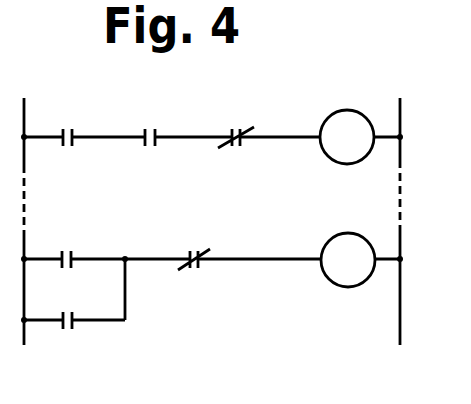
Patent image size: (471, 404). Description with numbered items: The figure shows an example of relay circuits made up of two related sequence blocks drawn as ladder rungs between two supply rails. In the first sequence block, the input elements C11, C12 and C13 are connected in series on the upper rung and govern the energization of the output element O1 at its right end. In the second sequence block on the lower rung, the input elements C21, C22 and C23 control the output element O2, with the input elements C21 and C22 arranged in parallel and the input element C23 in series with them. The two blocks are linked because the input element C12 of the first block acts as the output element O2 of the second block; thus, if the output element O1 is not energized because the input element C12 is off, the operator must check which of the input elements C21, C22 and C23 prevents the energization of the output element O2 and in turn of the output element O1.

The input element C11 is at (70, 139).
The input element C12 is at (152, 139).
The input element C13 is at (240, 139).
The output element O1 is at (350, 141).
The output element O2 is at (351, 263).
The input element C21 is at (70, 259).
The input element C22 is at (70, 323).
The input element C23 is at (197, 260).